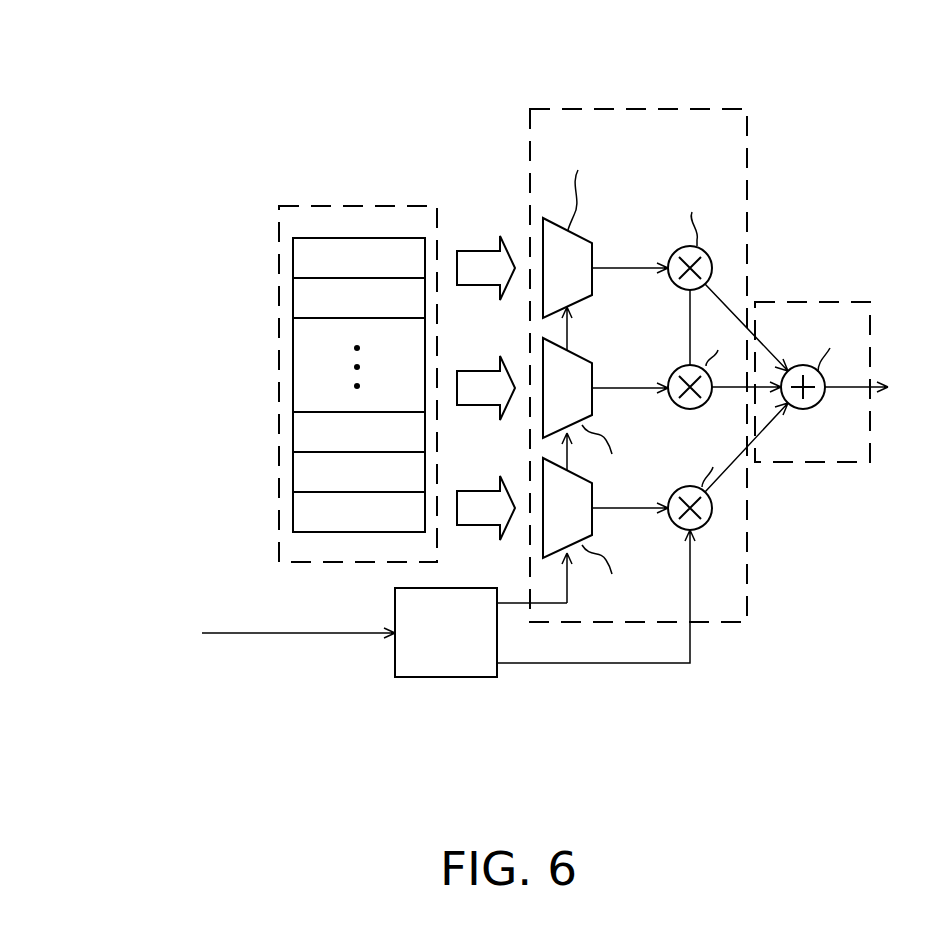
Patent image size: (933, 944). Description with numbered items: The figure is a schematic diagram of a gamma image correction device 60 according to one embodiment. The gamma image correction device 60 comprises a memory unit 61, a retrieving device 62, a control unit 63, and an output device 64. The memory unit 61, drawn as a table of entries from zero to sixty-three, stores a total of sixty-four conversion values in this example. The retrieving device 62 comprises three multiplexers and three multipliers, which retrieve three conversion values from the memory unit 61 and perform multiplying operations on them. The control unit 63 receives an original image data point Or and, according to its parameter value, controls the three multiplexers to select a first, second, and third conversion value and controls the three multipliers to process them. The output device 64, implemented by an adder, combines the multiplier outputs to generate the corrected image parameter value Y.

The gamma image correction device 60 is at (266, 715).
The memory unit 61 is at (368, 206).
The retrieving device 62 is at (650, 108).
The control unit 63 is at (460, 677).
The output device 64 is at (808, 302).